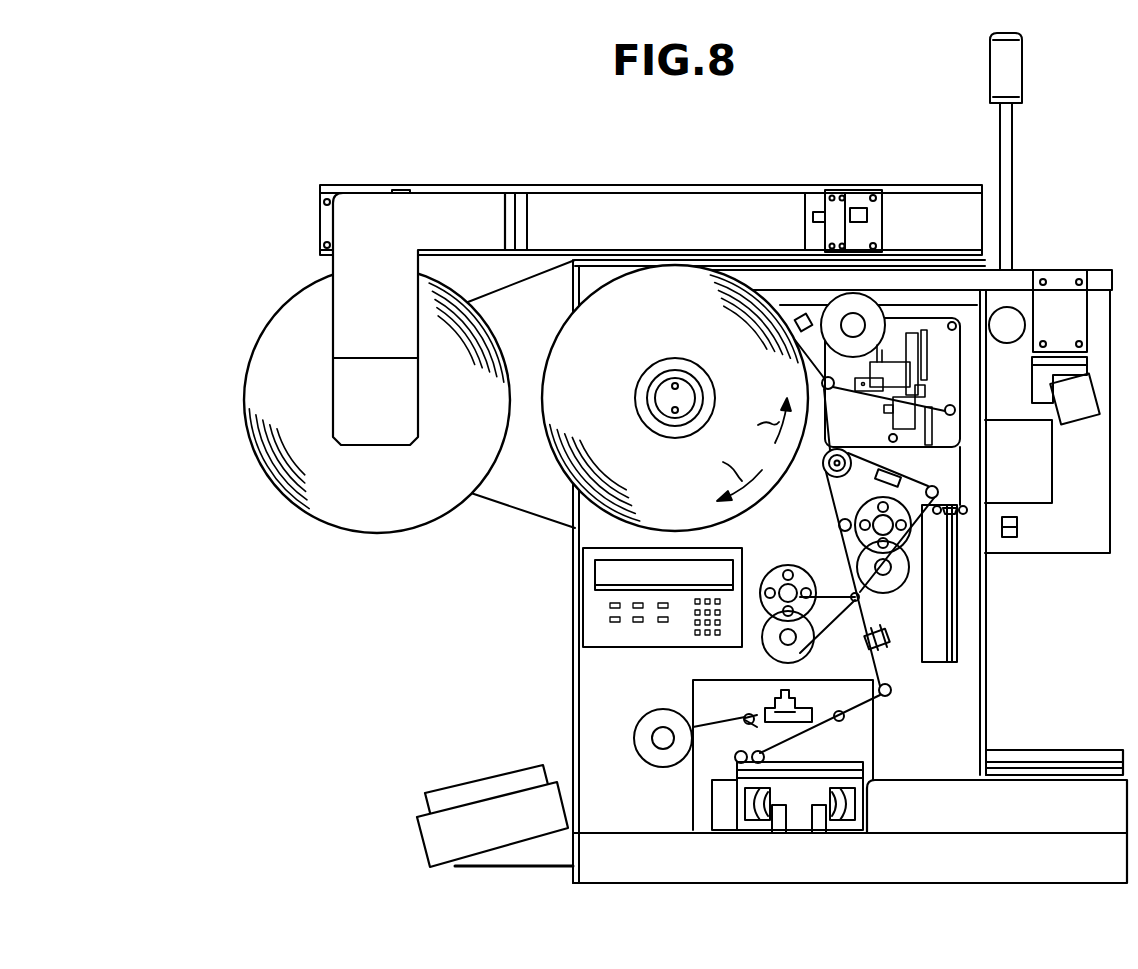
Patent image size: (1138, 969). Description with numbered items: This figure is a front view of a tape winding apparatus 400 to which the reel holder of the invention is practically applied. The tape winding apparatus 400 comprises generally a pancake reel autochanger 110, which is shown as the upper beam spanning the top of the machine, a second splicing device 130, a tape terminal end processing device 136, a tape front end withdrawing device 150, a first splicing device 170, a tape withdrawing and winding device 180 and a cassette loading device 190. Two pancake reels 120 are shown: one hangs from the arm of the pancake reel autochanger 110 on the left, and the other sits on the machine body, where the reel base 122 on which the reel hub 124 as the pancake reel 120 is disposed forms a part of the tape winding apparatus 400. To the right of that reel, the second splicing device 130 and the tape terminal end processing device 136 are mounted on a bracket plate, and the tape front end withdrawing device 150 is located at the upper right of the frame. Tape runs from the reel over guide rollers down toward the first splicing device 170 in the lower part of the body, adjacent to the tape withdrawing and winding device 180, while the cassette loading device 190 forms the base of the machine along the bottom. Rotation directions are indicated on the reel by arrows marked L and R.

The tape winding apparatus 400 is at (425, 151).
The pancake reel autochanger 110 is at (466, 186).
The pancake reel 120 is at (275, 330).
The reel base 122 is at (690, 380).
The reel hub 124 is at (660, 380).
The second splicing device 130 is at (891, 336).
The tape terminal end processing device 136 is at (937, 346).
The tape front end withdrawing device 150 is at (1061, 273).
The first splicing device 170 is at (693, 693).
The tape withdrawing and winding device 180 is at (728, 744).
The cassette loading device 190 is at (840, 834).